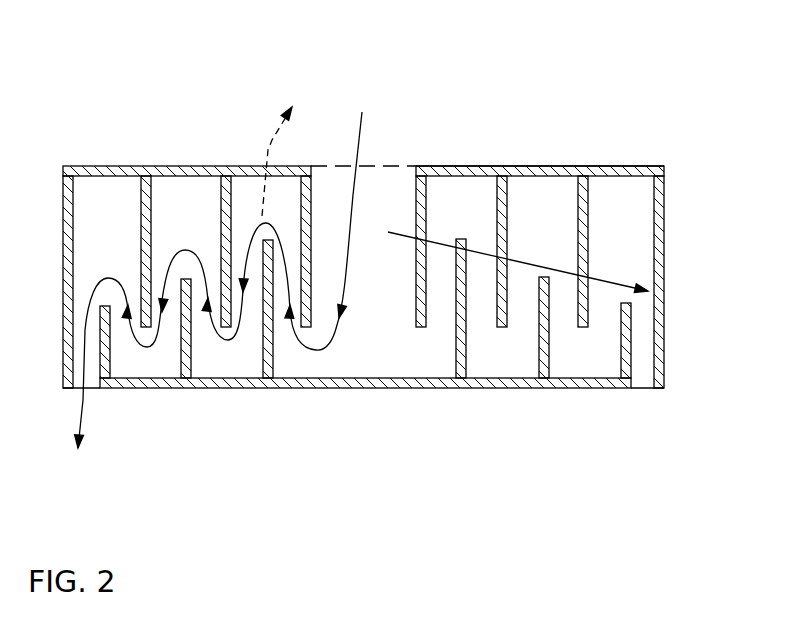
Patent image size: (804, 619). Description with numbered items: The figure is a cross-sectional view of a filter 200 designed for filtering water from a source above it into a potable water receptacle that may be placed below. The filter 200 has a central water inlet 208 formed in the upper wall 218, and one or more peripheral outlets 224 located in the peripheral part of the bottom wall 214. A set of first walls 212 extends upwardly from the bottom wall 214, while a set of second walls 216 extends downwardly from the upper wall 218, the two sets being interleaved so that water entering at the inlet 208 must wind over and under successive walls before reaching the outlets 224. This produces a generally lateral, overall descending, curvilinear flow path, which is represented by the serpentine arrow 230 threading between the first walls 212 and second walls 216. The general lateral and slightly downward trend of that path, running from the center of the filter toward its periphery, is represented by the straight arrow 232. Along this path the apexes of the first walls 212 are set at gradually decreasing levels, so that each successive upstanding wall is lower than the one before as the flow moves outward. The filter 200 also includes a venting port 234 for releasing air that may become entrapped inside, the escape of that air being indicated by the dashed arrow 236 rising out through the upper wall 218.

The filter 200 is at (606, 92).
The central water inlet 208 is at (378, 165).
The first walls 212 is at (620, 362).
The bottom wall 214 is at (382, 390).
The second walls 216 is at (587, 213).
The upper wall 218 is at (559, 166).
The peripheral outlet 224 is at (642, 388).
The curvilinear flow path arrow 230 is at (228, 345).
The general flow trend arrow 232 is at (610, 282).
The venting port 234 is at (462, 176).
The air release arrow 236 is at (273, 132).